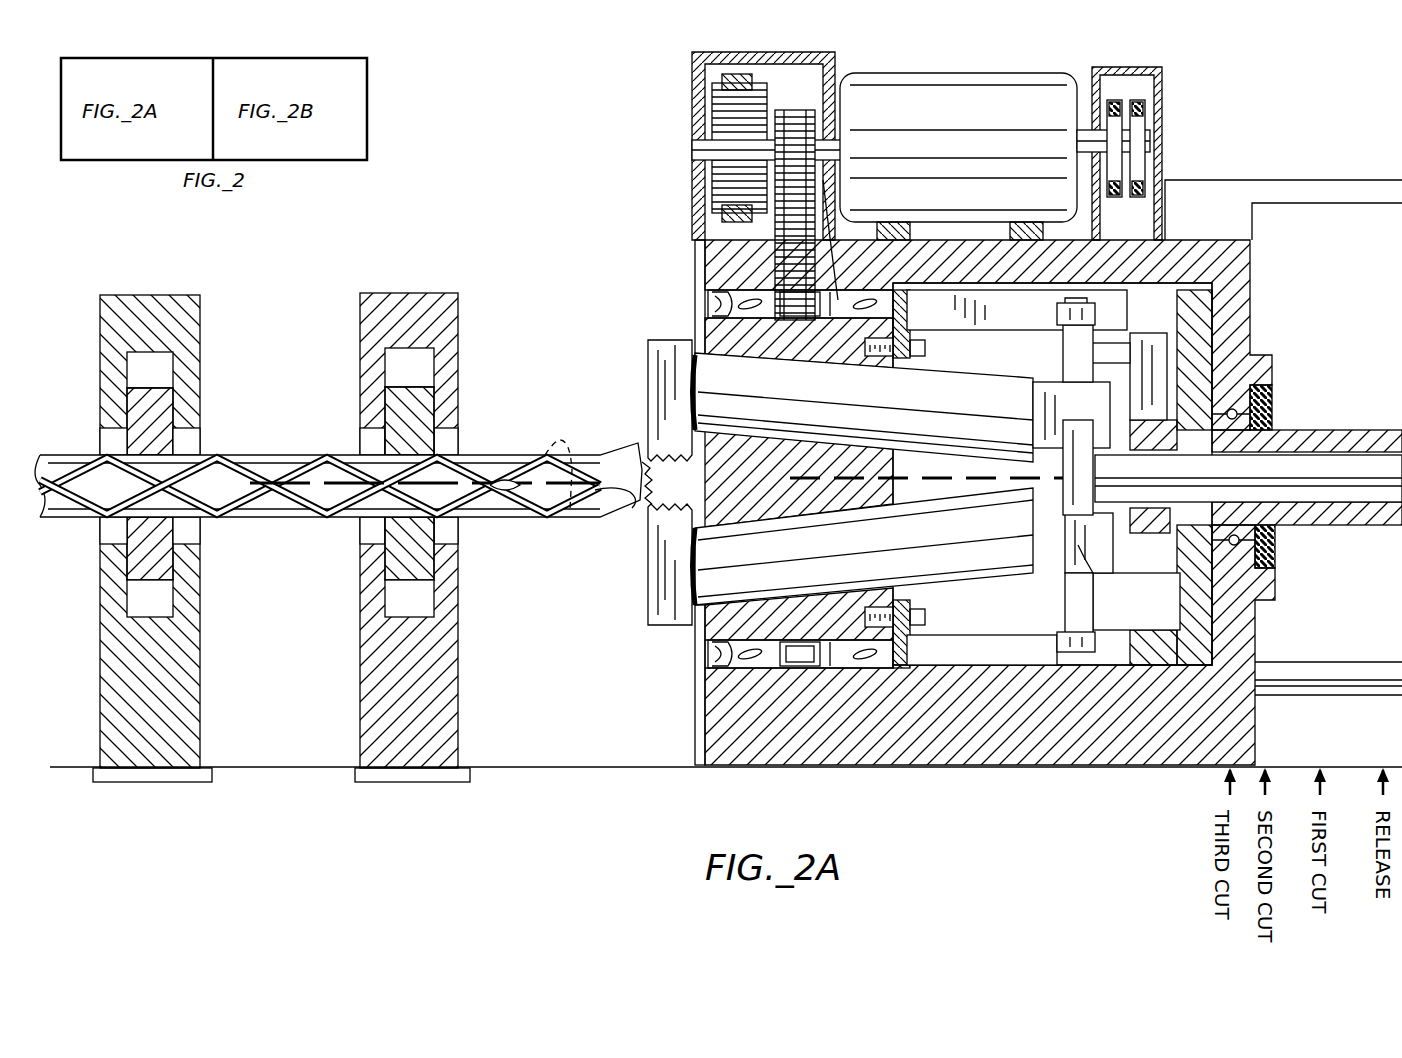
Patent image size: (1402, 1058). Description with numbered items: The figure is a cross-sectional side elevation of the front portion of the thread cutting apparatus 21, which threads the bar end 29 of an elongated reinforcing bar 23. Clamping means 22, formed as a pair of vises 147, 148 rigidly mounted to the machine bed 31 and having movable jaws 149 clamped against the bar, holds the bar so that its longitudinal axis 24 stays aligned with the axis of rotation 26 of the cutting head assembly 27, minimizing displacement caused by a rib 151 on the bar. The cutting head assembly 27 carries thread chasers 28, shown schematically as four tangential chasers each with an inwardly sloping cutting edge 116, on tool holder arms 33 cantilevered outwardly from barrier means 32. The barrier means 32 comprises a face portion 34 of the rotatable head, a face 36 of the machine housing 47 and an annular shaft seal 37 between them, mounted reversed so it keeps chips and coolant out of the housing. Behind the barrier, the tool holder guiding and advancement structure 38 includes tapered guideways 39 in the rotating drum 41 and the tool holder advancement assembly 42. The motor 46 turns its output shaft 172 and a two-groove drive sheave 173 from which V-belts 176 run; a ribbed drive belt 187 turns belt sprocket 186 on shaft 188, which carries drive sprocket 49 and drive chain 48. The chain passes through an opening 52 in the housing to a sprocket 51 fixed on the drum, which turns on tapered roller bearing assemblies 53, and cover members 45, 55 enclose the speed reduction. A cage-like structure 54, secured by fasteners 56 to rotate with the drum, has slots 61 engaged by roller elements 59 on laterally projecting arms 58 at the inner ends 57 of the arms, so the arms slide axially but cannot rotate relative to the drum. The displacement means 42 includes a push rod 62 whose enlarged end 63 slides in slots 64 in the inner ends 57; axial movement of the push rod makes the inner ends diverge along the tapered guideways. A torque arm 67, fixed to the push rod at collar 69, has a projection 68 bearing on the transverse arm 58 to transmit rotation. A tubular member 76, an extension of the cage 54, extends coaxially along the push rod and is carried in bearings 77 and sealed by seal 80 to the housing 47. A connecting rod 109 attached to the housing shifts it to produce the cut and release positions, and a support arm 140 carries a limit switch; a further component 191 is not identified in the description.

The thread cutting apparatus 21 is at (1252, 88).
The clamping means 22 is at (392, 235).
The reinforcing bar 23 is at (255, 455).
The longitudinal axis 24 is at (533, 457).
The axis of rotation 26 is at (920, 470).
The cutting head assembly 27 is at (640, 658).
The thread chasers 28 is at (670, 380).
The bar end 29 is at (628, 502).
The machine bed 31 is at (540, 735).
The barrier means 32 is at (640, 268).
The tool holder arms 33 is at (700, 370).
The face portion 34 is at (712, 645).
The housing face 36 is at (695, 240).
The annular seal means 37 is at (712, 304).
The tool holder guiding and advancement structure 38 is at (1000, 608).
The guideways 39 is at (725, 435).
The rotating drum 41 is at (820, 470).
The tool holder advancement assembly 42 is at (1170, 385).
The cover member 45 is at (835, 58).
The motor 46 is at (965, 117).
The machine housing 47 is at (1250, 272).
The drive chain 48 is at (795, 310).
The drive sprocket 49 is at (815, 135).
The sprocket 51 is at (790, 305).
The opening 52 is at (838, 180).
The tapered roller bearing assemblies 53 is at (745, 300).
The cage-like structure 54 is at (1190, 310).
The cover member 55 is at (1162, 100).
The fasteners 56 is at (912, 348).
The inner ends 57 is at (1093, 575).
The laterally projecting arms 58 is at (1060, 382).
The roller elements 59 is at (1057, 312).
The slots 61 is at (935, 314).
The push rod 62 is at (1335, 470).
The enlarged end 63 is at (1063, 510).
The slots 64 is at (1080, 570).
The torque arm 67 is at (1185, 345).
The projection 68 is at (1075, 352).
The collar 69 is at (1145, 533).
The tubular member 76 is at (1345, 455).
The bearings 77 is at (1230, 420).
The seal 80 is at (1272, 405).
The connecting rod 109 is at (1282, 662).
The cutting edge 116 is at (645, 460).
The support arm 140 is at (1295, 180).
The vise 147 is at (140, 295).
The vise 148 is at (395, 293).
The movable jaws 149 is at (385, 375).
The rib 151 is at (505, 495).
The motor output shaft 172 is at (1077, 141).
The drive sheave 173 is at (1110, 125).
The V-belts 176 is at (1112, 100).
The belt sprocket 186 is at (712, 96).
The ribbed drive belt 187 is at (722, 80).
The shaft 188 is at (692, 145).
The motor mount 191 is at (893, 230).